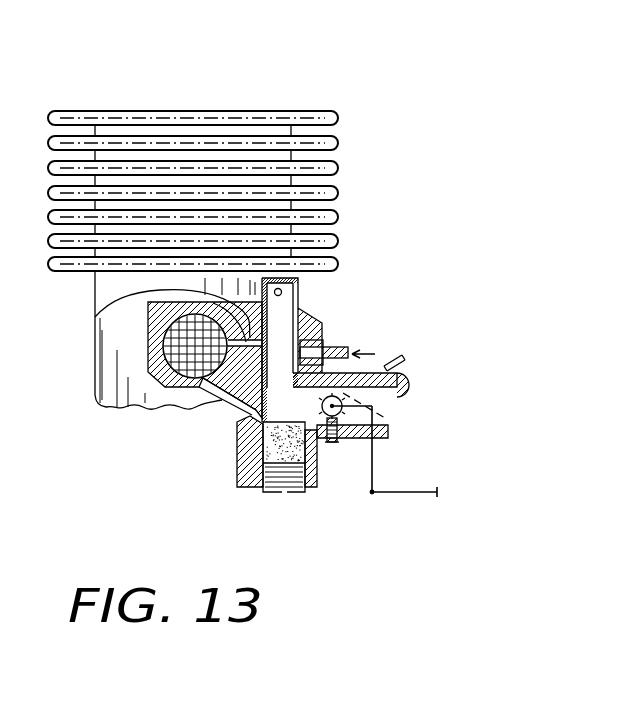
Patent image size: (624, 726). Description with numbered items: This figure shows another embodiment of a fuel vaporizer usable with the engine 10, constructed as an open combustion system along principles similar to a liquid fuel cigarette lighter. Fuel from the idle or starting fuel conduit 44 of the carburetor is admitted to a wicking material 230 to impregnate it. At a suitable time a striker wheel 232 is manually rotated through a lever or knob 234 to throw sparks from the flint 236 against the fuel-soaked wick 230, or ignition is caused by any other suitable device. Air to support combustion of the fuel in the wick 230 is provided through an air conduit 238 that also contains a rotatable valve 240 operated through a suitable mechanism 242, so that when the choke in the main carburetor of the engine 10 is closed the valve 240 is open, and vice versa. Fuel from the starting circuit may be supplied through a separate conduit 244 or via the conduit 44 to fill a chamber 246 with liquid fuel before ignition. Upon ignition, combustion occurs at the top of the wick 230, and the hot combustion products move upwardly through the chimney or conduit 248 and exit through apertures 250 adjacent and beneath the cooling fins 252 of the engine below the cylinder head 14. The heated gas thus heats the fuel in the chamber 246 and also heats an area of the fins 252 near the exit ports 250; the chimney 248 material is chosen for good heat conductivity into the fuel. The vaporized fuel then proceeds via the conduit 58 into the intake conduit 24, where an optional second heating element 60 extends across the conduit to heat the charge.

The engine 10 is at (356, 169).
The cylinder head 14 is at (337, 116).
The intake conduit 24 is at (162, 340).
The idle or starting fuel conduit 44 is at (222, 410).
The conduit 58 is at (95, 317).
The second heating element 60 is at (150, 350).
The wicking material 230 is at (240, 465).
The striker wheel 232 is at (335, 443).
The lever or knob 234 is at (405, 360).
The flint 236 is at (328, 443).
The air conduit 238 is at (397, 390).
The rotatable valve 240 is at (397, 432).
The mechanism 242 is at (368, 478).
The separate conduit 244 is at (343, 348).
The chamber 246 is at (327, 335).
The chimney or conduit 248 is at (298, 305).
The apertures 250 is at (298, 290).
The cooling fins 252 is at (338, 222).